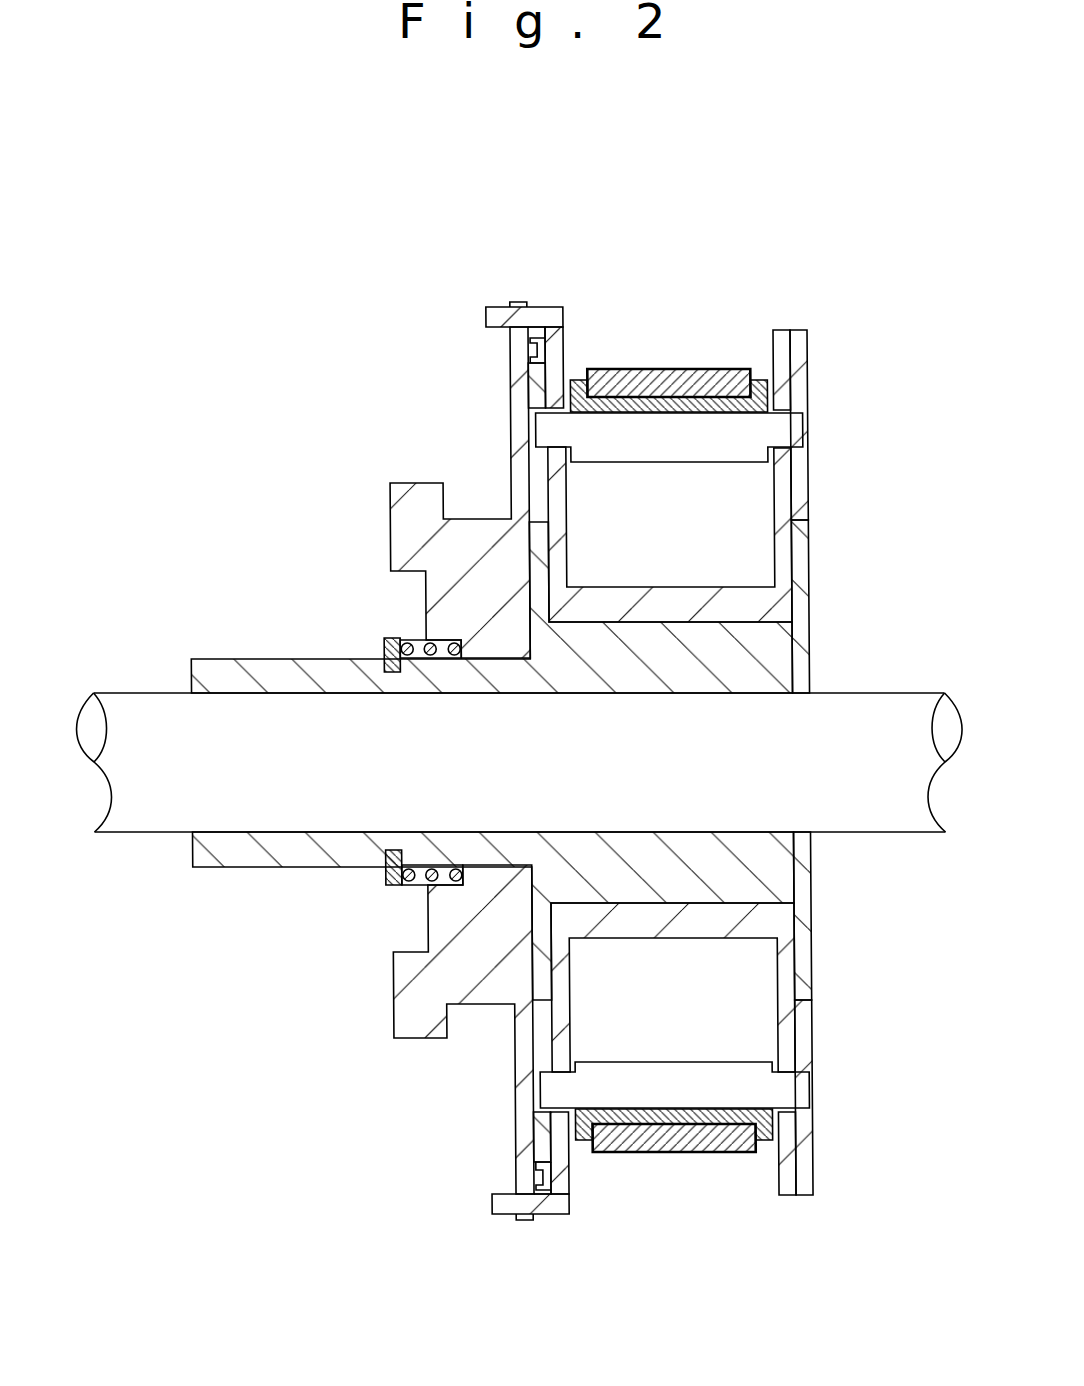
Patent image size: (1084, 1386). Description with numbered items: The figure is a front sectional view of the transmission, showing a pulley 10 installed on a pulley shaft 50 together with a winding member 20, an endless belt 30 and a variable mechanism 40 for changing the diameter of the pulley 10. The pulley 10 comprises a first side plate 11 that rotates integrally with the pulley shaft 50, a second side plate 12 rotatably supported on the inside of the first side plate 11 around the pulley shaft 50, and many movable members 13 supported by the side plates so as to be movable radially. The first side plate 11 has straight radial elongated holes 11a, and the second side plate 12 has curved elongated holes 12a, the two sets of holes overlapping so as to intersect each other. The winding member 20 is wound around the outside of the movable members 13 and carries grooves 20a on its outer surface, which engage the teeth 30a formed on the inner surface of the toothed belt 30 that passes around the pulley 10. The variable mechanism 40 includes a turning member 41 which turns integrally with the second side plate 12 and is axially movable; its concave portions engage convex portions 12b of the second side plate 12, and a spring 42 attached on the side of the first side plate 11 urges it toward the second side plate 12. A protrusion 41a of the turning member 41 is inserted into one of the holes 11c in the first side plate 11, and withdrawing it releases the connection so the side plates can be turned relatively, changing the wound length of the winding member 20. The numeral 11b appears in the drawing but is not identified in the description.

The pulley 10 is at (819, 350).
The first side plate 11 is at (785, 660).
The elongated holes 11a is at (805, 468).
The lower flange of housing 11b is at (520, 1186).
The holes 11c is at (548, 300).
The second side plate 12 is at (790, 566).
The elongated holes 12a is at (808, 404).
The convex portions 12b is at (524, 1222).
The movable members 13 is at (780, 432).
The winding member 20 is at (706, 415).
The grooves 20a is at (640, 420).
The belt 30 is at (598, 365).
The teeth 30a is at (684, 368).
The variable mechanism 40 is at (347, 486).
The turning member 41 is at (388, 530).
The protrusion 41a is at (525, 352).
The spring 42 is at (408, 880).
The pulley shaft 50 is at (897, 833).